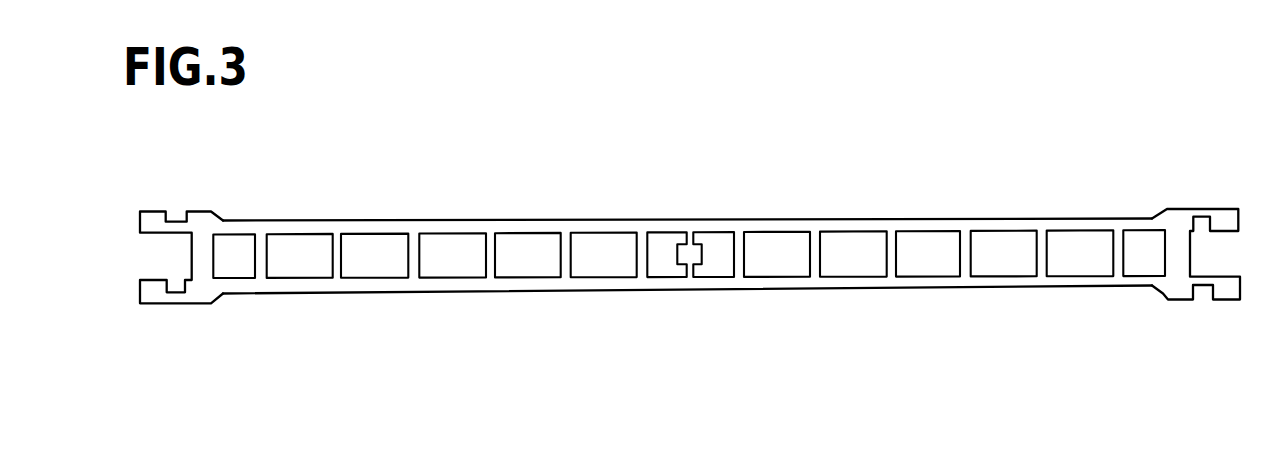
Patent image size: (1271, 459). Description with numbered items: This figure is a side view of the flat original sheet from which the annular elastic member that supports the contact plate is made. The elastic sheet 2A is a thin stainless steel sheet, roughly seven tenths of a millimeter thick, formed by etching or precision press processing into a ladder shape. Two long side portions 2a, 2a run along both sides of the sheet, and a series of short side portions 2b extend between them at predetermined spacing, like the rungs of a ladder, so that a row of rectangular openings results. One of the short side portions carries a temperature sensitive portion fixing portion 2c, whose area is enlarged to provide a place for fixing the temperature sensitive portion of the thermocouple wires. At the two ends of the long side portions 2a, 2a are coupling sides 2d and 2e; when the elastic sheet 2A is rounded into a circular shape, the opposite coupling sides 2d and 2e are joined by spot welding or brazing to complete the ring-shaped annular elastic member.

The elastic sheet 2A is at (697, 243).
The long side portion 2a is at (997, 220).
The short side portion 2b is at (817, 263).
The temperature sensitive portion fixing portion 2c is at (700, 254).
The coupling side 2d is at (1228, 293).
The coupling side 2e is at (157, 292).